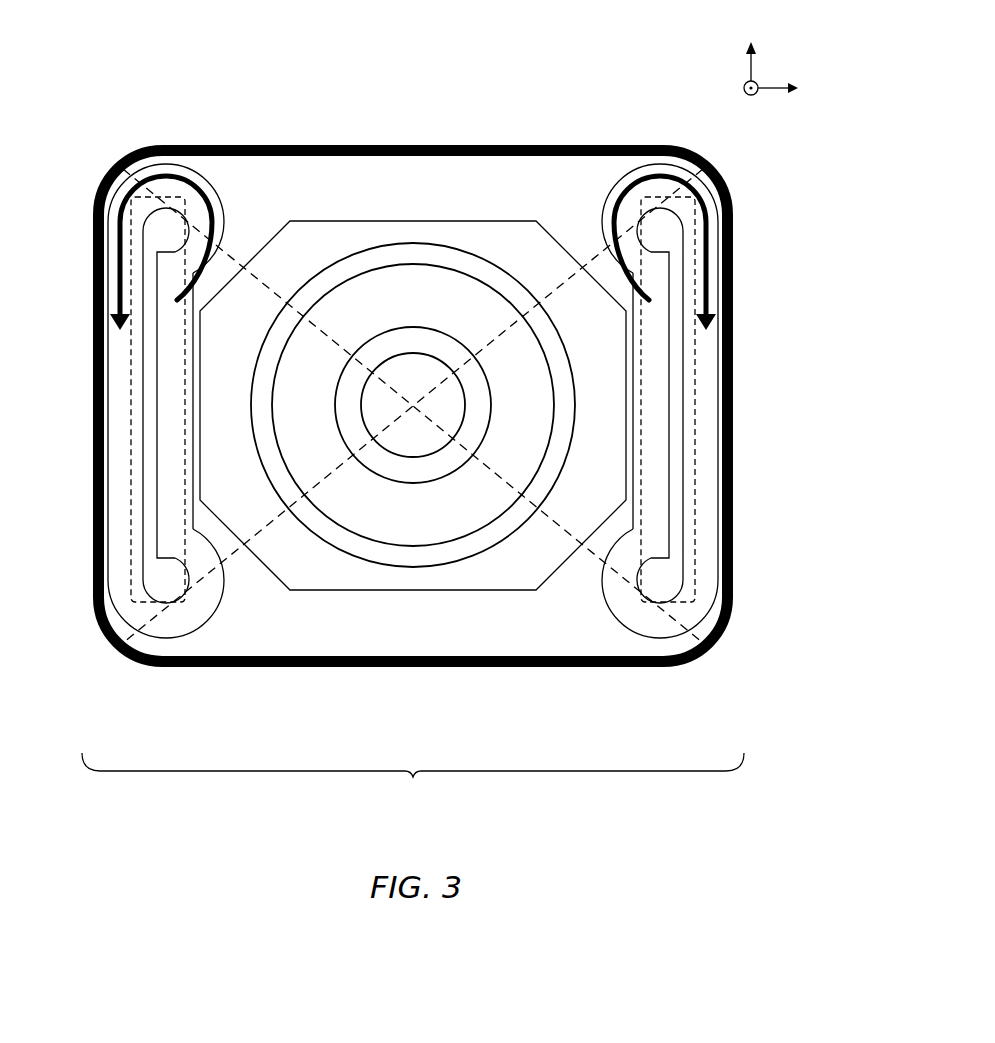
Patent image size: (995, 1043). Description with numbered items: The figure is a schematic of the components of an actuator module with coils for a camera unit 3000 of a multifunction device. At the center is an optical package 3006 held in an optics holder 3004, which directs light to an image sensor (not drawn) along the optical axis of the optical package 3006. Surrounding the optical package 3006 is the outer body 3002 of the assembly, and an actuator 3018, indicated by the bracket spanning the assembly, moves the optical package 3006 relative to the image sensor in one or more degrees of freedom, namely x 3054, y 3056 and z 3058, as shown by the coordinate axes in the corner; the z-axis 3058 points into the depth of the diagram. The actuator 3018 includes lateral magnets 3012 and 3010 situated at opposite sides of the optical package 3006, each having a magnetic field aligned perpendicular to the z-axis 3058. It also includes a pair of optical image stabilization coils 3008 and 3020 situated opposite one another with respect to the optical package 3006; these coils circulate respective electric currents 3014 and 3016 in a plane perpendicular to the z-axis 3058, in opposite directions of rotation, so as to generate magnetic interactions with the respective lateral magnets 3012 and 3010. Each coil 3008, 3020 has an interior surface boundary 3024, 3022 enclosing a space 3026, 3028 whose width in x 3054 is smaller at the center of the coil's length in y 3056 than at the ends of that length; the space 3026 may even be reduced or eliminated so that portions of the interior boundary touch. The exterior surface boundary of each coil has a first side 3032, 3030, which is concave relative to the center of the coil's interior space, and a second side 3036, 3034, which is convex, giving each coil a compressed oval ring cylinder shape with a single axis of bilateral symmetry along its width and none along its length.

The camera unit 3000 is at (202, 116).
The housing 3002 is at (388, 150).
The optics holder 3004 is at (536, 252).
The optical package 3006 is at (439, 310).
The optical image stabilization coil 3008 is at (197, 618).
The lateral magnet 3010 is at (694, 493).
The lateral magnet 3012 is at (130, 386).
The electric current 3014 is at (110, 302).
The electric current 3016 is at (702, 300).
The actuator 3018 is at (413, 777).
The optical image stabilization coil 3020 is at (712, 567).
The interior surface boundary 3022 is at (658, 556).
The interior surface boundary 3024 is at (168, 556).
The space 3026 is at (153, 580).
The space 3028 is at (629, 618).
The first side 3030 is at (633, 500).
The first side 3032 is at (193, 500).
The second side 3034 is at (706, 390).
The second side 3036 is at (118, 440).
The x 3054 is at (784, 86).
The y 3056 is at (743, 63).
The z-axis 3058 is at (752, 97).